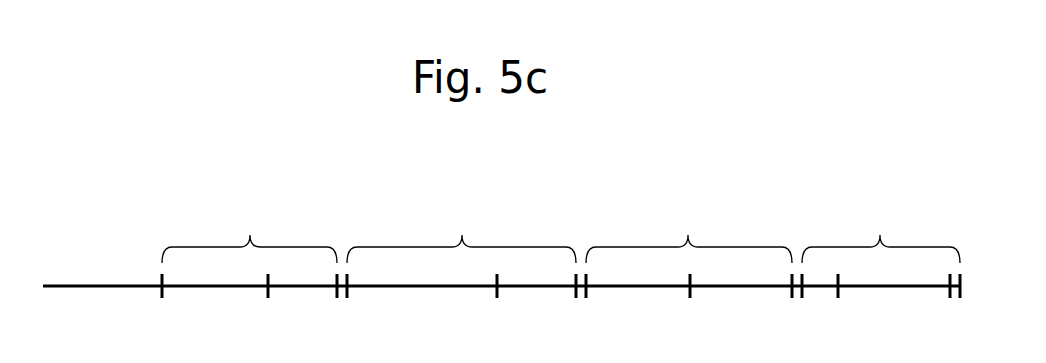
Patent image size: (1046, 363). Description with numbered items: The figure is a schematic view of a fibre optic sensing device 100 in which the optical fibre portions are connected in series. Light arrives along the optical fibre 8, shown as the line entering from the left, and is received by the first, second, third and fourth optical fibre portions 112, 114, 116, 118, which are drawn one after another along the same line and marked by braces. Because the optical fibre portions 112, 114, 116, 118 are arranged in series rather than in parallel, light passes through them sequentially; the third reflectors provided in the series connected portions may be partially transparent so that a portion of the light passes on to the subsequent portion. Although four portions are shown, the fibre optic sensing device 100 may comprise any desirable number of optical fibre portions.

The optical fibre 8 is at (112, 283).
The fibre optic sensing device 100 is at (770, 198).
The first optical fibre portion 112 is at (250, 232).
The second optical fibre portion 114 is at (462, 232).
The third optical fibre portion 116 is at (688, 232).
The fourth optical fibre portion 118 is at (880, 232).